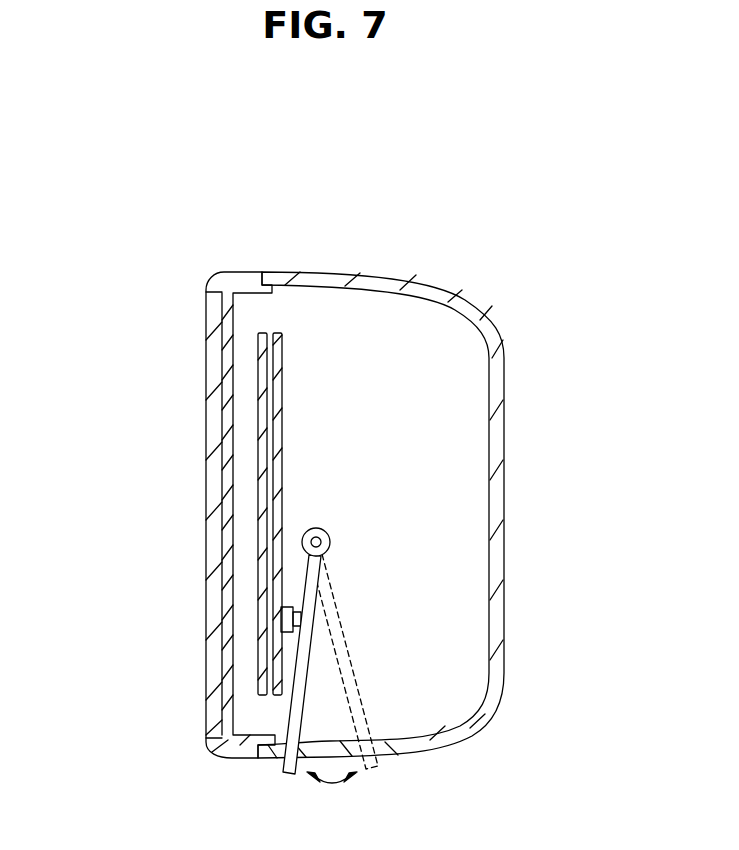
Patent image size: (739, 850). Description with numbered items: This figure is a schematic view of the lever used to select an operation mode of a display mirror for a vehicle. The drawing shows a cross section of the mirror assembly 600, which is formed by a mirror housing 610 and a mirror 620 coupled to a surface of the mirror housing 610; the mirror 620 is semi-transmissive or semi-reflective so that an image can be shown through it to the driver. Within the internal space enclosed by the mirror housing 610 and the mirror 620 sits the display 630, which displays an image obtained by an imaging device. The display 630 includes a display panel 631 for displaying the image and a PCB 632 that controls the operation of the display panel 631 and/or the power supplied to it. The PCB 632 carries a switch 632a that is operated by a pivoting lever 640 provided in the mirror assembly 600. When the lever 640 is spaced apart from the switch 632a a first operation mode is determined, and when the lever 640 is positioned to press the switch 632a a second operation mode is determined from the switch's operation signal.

The mirror assembly 600 is at (526, 258).
The mirror housing 610 is at (410, 277).
The mirror 620 is at (207, 349).
The display 630 is at (102, 512).
The display panel 631 is at (258, 520).
The PCB 632 is at (273, 573).
The switch 632a is at (300, 617).
The lever 640 is at (305, 648).